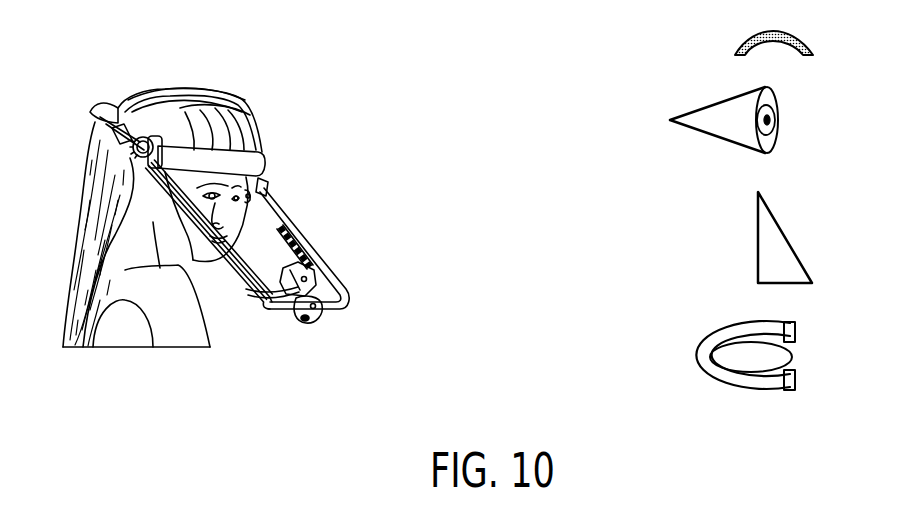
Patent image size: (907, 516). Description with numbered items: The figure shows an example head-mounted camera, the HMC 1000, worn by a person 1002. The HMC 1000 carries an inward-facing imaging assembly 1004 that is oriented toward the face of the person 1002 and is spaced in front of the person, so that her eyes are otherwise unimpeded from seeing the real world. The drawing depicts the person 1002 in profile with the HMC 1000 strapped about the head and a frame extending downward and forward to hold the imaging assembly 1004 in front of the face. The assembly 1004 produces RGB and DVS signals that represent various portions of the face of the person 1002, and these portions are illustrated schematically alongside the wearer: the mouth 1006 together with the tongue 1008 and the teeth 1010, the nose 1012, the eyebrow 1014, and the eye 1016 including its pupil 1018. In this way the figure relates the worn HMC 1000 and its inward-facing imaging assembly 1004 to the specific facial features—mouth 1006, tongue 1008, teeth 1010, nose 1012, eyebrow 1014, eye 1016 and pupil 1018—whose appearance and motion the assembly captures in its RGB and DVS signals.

The HMC 1000 is at (245, 205).
The person 1002 is at (248, 126).
The inward-facing imaging assembly 1004 is at (312, 267).
The mouth 1006 is at (697, 357).
The tongue 1008 is at (726, 363).
The teeth 1010 is at (784, 395).
The nose 1012 is at (785, 238).
The eyebrow 1014 is at (734, 47).
The eye 1016 is at (696, 110).
The pupil 1018 is at (753, 134).